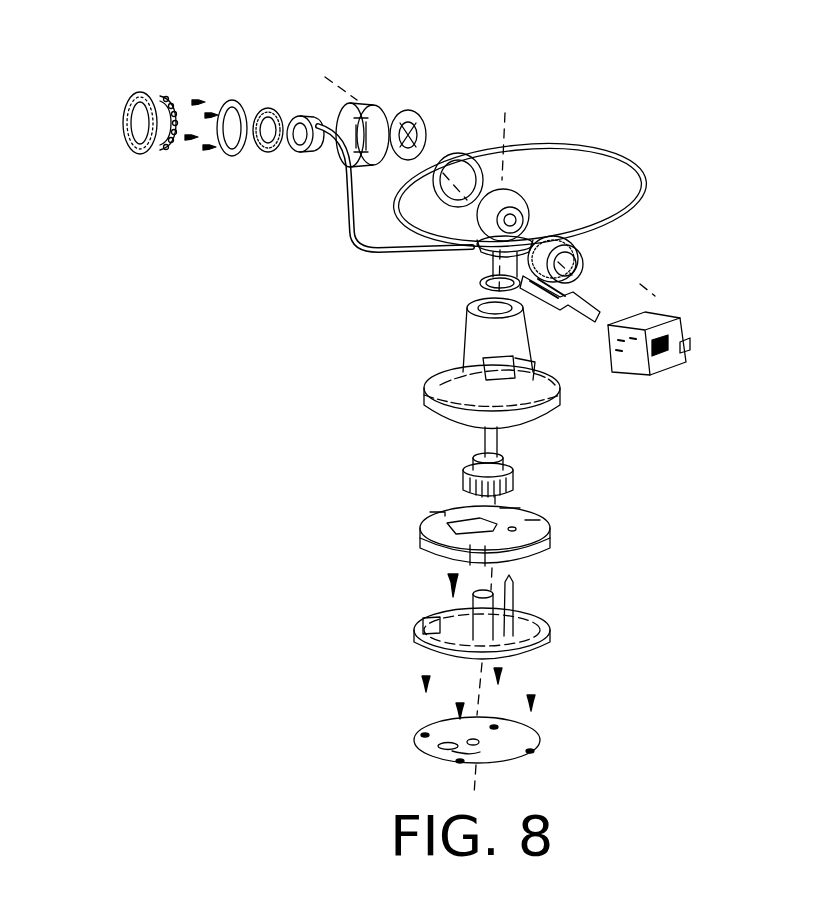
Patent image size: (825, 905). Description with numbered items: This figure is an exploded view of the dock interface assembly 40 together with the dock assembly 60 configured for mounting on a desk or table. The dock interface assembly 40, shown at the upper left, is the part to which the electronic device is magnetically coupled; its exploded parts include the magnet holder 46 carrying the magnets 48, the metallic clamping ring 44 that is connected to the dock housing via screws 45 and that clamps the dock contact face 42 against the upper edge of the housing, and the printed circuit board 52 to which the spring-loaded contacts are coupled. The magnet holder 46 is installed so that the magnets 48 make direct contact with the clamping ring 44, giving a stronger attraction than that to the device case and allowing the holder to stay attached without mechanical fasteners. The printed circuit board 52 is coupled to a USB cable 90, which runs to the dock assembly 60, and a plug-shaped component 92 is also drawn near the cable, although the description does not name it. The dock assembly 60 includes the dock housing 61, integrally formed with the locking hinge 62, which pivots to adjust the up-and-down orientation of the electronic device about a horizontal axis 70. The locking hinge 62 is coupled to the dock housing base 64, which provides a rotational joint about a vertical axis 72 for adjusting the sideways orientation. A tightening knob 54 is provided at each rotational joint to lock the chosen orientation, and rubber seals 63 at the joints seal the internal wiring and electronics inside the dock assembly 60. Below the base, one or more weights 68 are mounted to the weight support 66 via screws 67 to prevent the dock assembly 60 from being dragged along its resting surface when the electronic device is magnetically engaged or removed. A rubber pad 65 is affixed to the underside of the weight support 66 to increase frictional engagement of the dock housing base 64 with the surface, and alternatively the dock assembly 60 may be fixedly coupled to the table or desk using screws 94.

The dock interface assembly 40 is at (127, 85).
The magnet holder 46 is at (138, 153).
The magnets 48 is at (162, 152).
The screws 45 is at (208, 148).
The clamping ring 44 is at (233, 157).
The dock contact face 42 is at (273, 152).
The printed circuit board 52 is at (307, 153).
The dock housing 61 is at (363, 233).
The USB cable 90 is at (590, 150).
The locking hinge 62 is at (417, 113).
The rubber seals 63 is at (483, 168).
The tightening knob 54 is at (583, 250).
The horizontal axis 70 is at (597, 290).
The power adapter 92 is at (647, 311).
The dock housing base 64 is at (423, 373).
The weights 68 is at (420, 523).
The screws 94 is at (447, 577).
The weight support 66 is at (541, 630).
The screws 67 is at (420, 684).
The rubber pad 65 is at (541, 742).
The vertical axis 72 is at (475, 763).
The dock assembly 60 is at (717, 202).